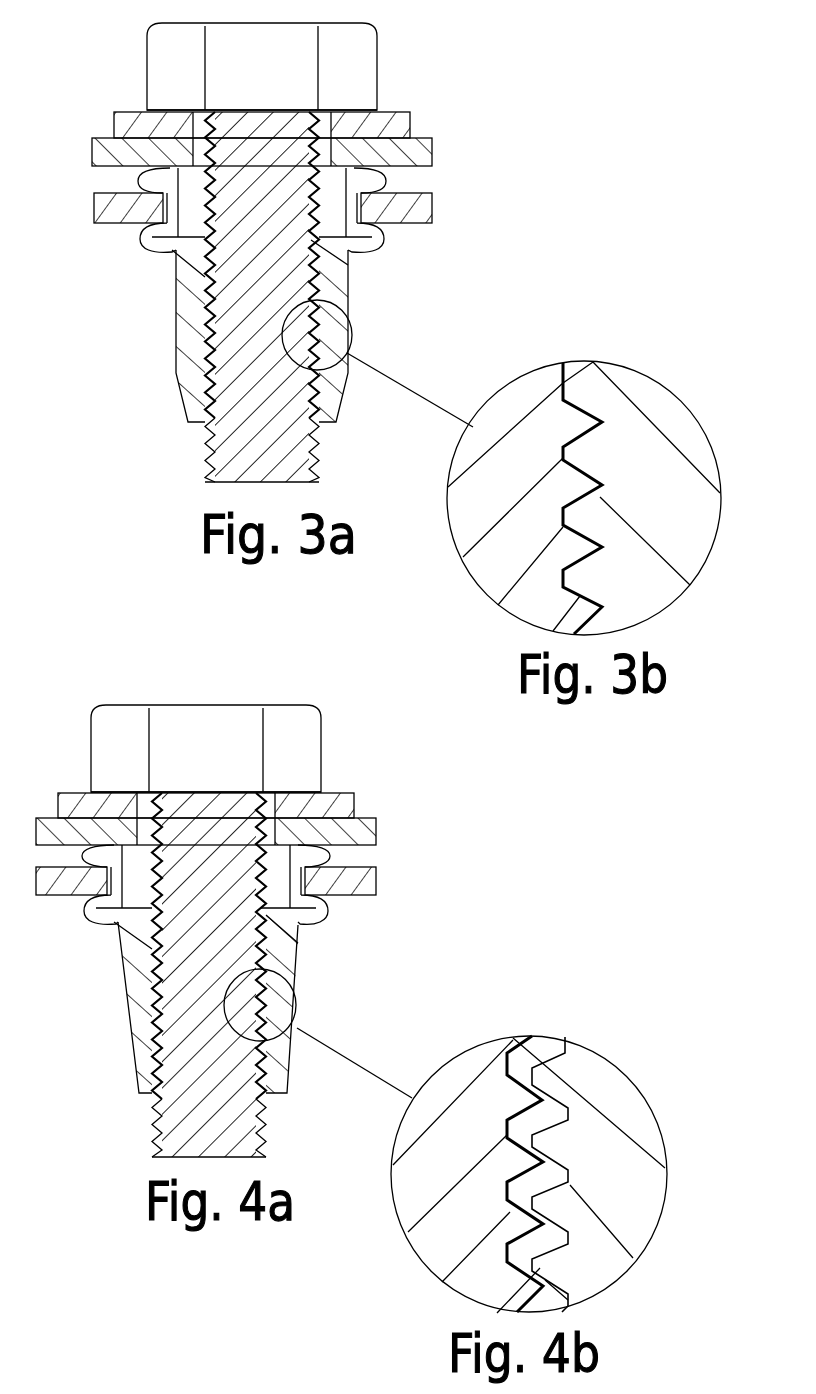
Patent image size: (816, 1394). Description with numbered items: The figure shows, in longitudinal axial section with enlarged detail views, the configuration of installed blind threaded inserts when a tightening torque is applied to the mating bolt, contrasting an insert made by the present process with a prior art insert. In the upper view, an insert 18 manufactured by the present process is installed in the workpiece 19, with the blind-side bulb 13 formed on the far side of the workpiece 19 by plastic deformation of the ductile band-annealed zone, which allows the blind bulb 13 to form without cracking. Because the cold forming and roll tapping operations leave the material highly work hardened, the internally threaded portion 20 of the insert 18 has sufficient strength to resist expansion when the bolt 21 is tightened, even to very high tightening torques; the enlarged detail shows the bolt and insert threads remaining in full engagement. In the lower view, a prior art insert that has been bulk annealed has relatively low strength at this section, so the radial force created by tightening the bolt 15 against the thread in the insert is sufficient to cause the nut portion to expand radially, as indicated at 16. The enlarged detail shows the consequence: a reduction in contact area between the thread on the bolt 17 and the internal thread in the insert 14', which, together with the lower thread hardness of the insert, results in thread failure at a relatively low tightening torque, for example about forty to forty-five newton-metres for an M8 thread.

In FIG. 3A, the bolt 21 is at (360, 72).
In FIG. 3A, the workpiece 19 is at (432, 204).
In FIG. 3A, the blind-side bulb 13 is at (377, 236).
In FIG. 3A, the insert 18 is at (175, 300).
In FIG. 3A, the internally threaded portion 20 is at (188, 340).
In FIG. 4A, the bolt 15 is at (295, 755).
In FIG. 4A, the radial expansion of nut portion 16 is at (118, 1007).
In FIG. 4B, the thread on the bolt 17 is at (518, 1140).
In FIG. 4B, the internal thread in the insert 14' is at (628, 1174).